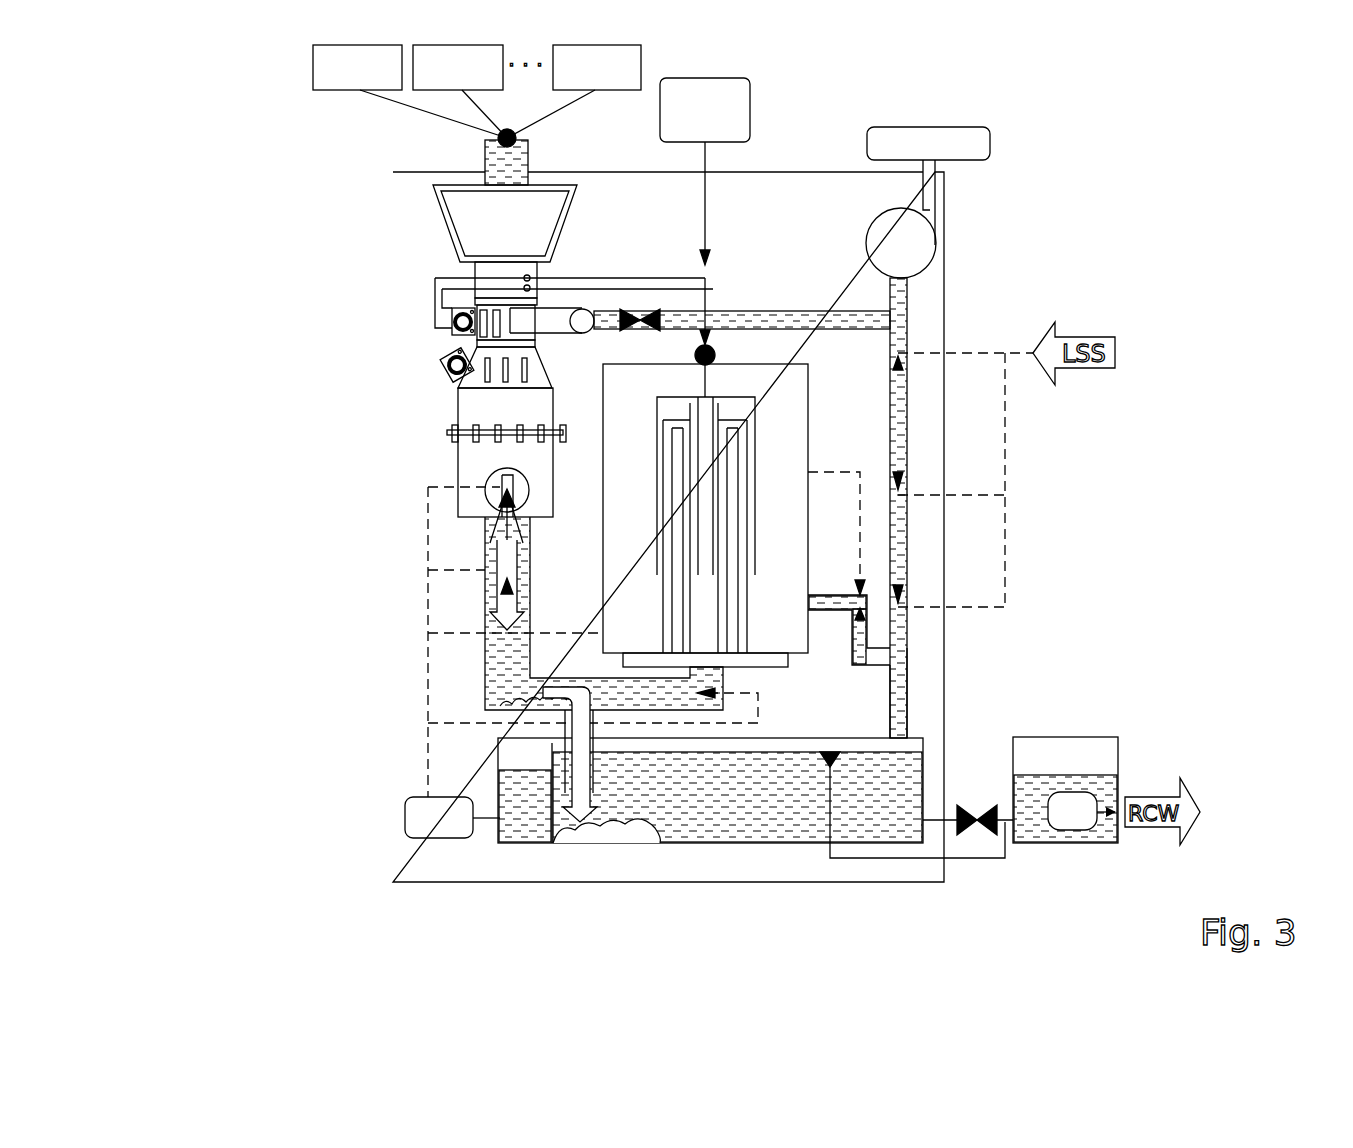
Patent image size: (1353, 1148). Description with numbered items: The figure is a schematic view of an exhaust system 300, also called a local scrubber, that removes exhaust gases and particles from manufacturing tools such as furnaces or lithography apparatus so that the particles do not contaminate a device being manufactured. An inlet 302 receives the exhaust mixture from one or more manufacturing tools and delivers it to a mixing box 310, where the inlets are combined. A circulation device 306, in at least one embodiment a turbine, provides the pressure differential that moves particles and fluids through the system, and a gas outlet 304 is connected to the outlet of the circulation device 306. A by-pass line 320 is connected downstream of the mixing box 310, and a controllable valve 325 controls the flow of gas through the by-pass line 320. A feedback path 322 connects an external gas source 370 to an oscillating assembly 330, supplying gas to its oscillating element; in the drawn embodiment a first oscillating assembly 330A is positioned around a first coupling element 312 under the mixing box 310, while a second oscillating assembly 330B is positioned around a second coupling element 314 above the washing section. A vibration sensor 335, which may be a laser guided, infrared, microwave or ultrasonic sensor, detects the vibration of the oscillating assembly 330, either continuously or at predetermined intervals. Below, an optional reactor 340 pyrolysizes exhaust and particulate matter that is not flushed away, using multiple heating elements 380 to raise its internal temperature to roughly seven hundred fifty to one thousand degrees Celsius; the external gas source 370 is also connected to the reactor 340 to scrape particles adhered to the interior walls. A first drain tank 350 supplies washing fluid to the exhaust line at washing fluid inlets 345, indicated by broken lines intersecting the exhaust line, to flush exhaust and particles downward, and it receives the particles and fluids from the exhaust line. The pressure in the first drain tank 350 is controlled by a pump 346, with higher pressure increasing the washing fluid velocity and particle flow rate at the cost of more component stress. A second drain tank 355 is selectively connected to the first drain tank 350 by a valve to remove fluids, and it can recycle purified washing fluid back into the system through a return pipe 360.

The exhaust system 300 is at (205, 102).
The inlet 302 is at (485, 152).
The gas outlet 304 is at (928, 197).
The circulation device 306 is at (923, 243).
The mixing box 310 is at (485, 222).
The first coupling element 312 is at (528, 290).
The second coupling element 314 is at (558, 445).
The by-pass line 320 is at (870, 318).
The feedback path 322 is at (713, 290).
The controllable valve 325 is at (640, 310).
The oscillating assembly 330 is at (348, 322).
The first oscillating assembly 330A is at (452, 322).
The second oscillating assembly 330B is at (445, 365).
The vibration sensor 335 is at (458, 383).
The reactor 340 is at (603, 597).
The washing fluid inlets 345 is at (485, 585).
The pump 346 is at (405, 818).
The first drain tank 350 is at (702, 827).
The second drain tank 355 is at (1033, 830).
The return pipe 360 is at (908, 630).
The external gas source 370 is at (735, 108).
The heating elements 380 is at (733, 647).